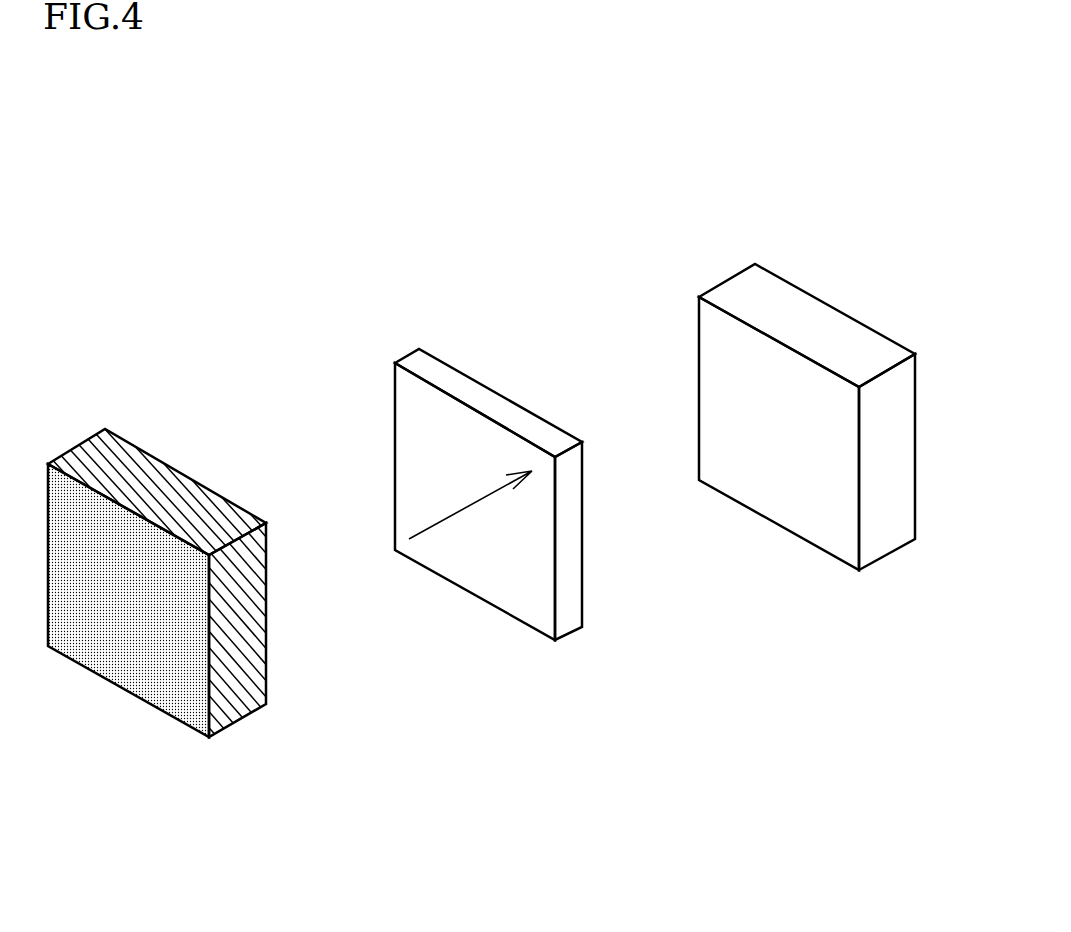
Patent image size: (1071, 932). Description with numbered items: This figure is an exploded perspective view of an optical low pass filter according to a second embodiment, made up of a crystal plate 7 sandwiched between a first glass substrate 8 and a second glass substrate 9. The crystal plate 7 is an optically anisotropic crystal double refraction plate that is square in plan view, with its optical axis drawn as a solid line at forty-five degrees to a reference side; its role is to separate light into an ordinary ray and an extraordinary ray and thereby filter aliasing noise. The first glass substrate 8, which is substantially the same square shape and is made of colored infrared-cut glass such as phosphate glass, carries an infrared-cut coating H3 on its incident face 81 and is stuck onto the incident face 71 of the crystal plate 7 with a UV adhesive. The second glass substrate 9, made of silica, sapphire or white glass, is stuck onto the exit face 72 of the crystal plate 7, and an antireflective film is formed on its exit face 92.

The crystal plate 7 is at (461, 483).
The incident face of the crystal plate 71 is at (423, 431).
The exit face of the crystal plate 72 is at (462, 371).
The first glass substrate 8 is at (200, 582).
The incident face of the first glass substrate 81 is at (73, 508).
The infrared-cut coating H3 is at (132, 661).
The second glass substrate 9 is at (823, 401).
The exit face of the second glass substrate 92 is at (797, 287).